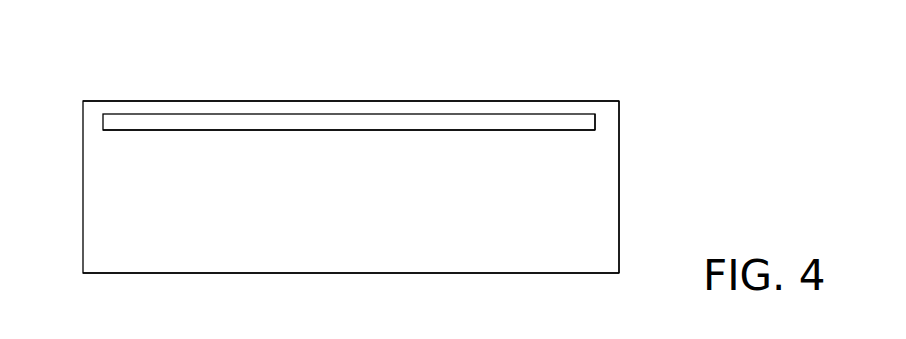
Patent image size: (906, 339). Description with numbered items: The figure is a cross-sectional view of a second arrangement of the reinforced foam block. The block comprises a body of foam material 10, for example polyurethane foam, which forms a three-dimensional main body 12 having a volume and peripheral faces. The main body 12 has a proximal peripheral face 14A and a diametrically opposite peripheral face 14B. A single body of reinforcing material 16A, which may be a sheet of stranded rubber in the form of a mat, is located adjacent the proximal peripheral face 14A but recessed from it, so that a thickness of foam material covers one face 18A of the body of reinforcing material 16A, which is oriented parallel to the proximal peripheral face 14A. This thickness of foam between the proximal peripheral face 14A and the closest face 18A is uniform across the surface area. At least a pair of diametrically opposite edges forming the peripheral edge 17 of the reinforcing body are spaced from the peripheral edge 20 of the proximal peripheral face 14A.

The body of foam material 10 is at (100, 202).
The main body 12 is at (744, 72).
The proximal peripheral face 14A is at (164, 98).
The peripheral face 14B is at (167, 276).
The body of reinforcing material 16A is at (462, 122).
The peripheral edge of the reinforcing body 17 is at (598, 123).
The face of the body of reinforcing material 18A is at (377, 113).
The peripheral edge of the proximal peripheral face 20 is at (626, 100).